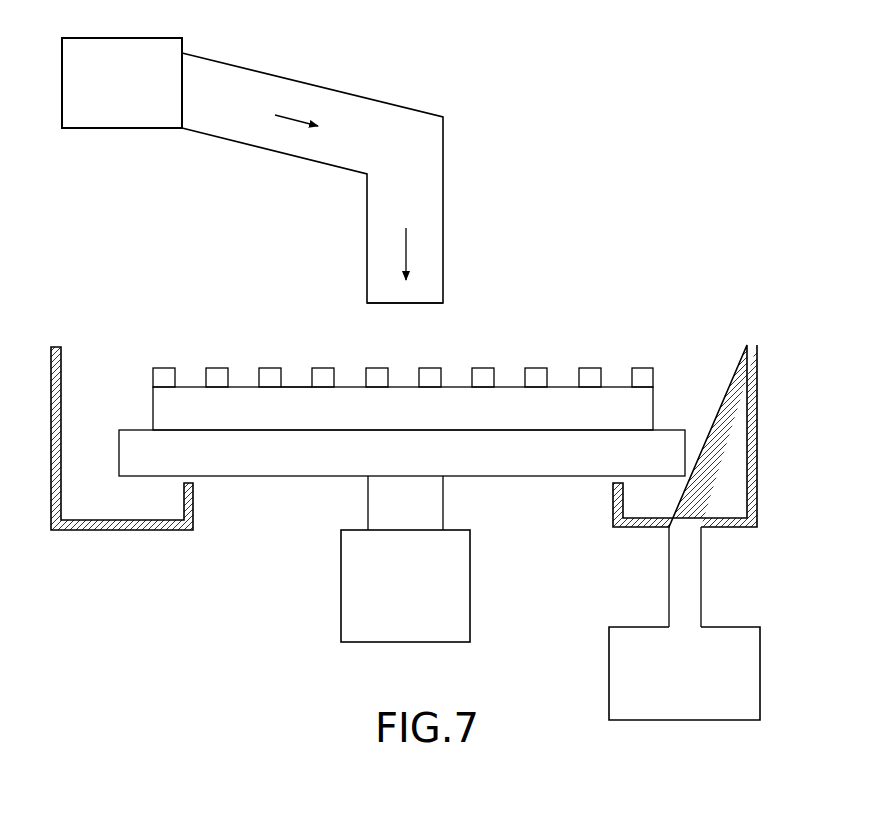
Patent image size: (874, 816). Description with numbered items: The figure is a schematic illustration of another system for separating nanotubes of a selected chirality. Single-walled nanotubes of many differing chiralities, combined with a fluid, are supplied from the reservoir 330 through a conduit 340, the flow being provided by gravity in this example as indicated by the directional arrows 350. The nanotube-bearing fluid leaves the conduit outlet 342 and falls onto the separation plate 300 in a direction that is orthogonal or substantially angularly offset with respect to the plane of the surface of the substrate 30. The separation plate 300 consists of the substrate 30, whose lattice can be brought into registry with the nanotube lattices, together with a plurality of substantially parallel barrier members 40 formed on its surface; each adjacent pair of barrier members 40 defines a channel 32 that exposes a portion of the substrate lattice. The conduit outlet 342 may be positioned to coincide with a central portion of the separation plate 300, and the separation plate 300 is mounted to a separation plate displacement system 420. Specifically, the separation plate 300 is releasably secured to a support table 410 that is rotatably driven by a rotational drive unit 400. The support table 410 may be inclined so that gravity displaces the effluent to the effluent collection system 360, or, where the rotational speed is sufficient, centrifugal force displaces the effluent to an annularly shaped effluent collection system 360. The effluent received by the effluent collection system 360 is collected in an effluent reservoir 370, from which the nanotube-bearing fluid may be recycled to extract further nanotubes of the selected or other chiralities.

The substrate 30 is at (403, 408).
The channel 32 is at (298, 387).
The barrier member 40 is at (270, 368).
The separation plate 300 is at (435, 369).
The reservoir 330 is at (182, 43).
The conduit 340 is at (444, 156).
The conduit outlet 342 is at (437, 304).
The directional arrows 350 is at (306, 124).
The effluent collection system 360 is at (757, 432).
The effluent reservoir 370 is at (761, 668).
The rotational drive unit 400 is at (471, 580).
The support table 410 is at (503, 477).
The separation plate displacement system 420 is at (314, 558).